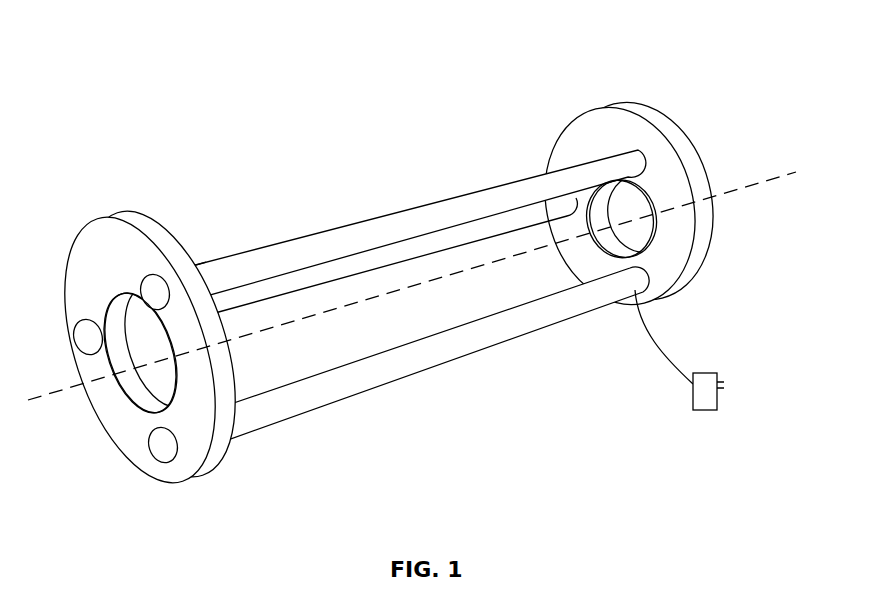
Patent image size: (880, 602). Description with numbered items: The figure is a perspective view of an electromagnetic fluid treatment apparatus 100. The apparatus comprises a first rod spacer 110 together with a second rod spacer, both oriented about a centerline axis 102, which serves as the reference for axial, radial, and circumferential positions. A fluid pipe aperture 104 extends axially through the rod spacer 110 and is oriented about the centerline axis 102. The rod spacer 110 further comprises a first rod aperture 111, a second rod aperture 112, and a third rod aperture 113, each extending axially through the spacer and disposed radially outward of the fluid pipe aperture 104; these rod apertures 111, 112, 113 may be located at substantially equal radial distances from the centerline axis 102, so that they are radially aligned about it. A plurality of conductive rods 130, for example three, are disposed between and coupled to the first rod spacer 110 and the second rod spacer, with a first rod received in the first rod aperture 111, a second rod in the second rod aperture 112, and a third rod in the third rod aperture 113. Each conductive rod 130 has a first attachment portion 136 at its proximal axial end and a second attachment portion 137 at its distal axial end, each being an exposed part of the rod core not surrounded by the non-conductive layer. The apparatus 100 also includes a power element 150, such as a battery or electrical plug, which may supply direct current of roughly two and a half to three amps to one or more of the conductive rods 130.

The electromagnetic fluid treatment apparatus 100 is at (115, 82).
The centerline axis 102 is at (738, 187).
The fluid pipe aperture 104 is at (155, 378).
The first rod spacer 110 is at (92, 266).
The first rod aperture 111 is at (146, 273).
The second rod aperture 112 is at (69, 318).
The third rod aperture 113 is at (171, 464).
The conductive rod 130 is at (362, 222).
The first attachment portion 136 is at (192, 265).
The second attachment portion 137 is at (606, 111).
The power element 150 is at (705, 410).